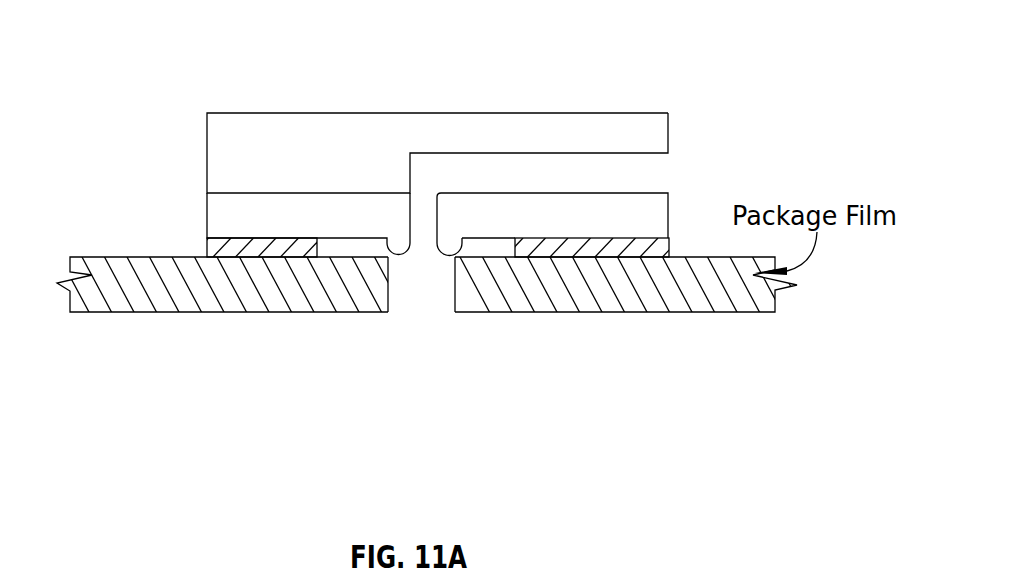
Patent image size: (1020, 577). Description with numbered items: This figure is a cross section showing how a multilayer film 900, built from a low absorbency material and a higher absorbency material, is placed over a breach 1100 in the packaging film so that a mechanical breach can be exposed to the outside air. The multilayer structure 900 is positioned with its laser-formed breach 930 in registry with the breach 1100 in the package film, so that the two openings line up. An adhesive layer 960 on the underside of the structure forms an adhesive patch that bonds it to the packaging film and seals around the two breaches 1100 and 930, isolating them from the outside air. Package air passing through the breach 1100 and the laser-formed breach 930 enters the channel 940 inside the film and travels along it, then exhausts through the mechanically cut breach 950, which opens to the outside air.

The multilayer film 900 is at (156, 102).
The channel 940 is at (448, 177).
The mechanically cut breach 950 is at (660, 174).
The laser-formed breach 930 is at (421, 264).
The adhesive layer 960 is at (639, 259).
The breach in the packaging film 1100 is at (400, 324).